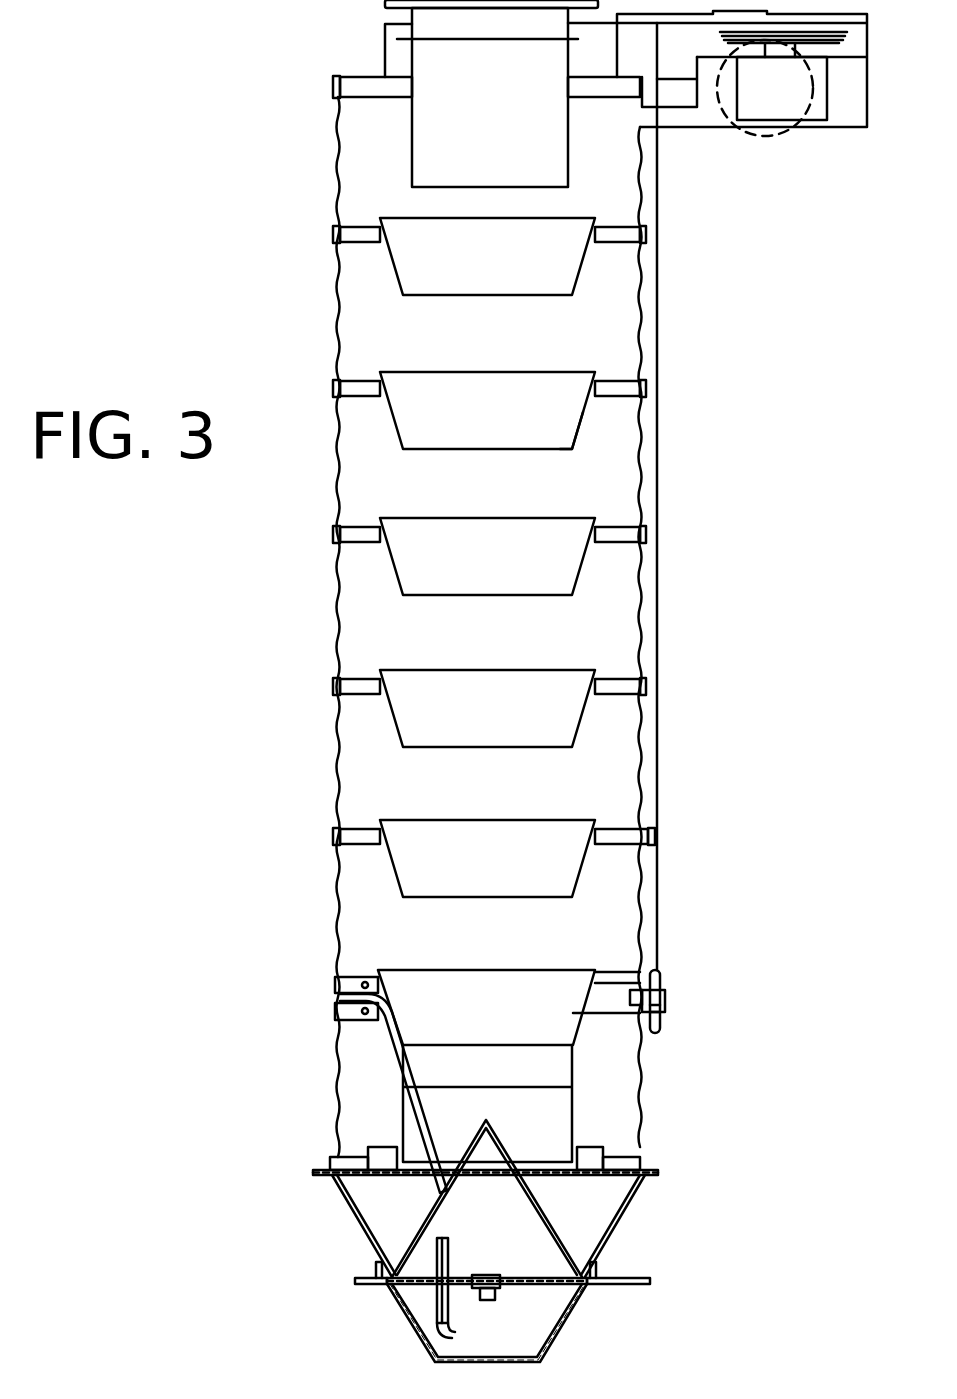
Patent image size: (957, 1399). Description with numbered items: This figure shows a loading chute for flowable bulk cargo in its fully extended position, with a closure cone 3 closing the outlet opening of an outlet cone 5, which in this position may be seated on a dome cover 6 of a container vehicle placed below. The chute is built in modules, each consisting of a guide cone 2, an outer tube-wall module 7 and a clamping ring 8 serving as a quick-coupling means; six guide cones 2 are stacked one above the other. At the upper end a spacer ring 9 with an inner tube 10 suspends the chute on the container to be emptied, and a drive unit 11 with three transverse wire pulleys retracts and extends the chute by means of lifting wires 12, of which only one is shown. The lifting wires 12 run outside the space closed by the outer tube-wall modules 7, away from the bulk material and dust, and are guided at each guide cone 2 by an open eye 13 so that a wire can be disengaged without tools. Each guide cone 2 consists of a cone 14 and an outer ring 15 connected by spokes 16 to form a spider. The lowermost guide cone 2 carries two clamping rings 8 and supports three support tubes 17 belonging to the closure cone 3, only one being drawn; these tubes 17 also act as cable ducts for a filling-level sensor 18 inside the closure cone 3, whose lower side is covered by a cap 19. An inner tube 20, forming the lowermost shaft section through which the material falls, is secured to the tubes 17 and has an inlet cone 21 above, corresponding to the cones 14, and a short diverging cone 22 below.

The guide cone 2 is at (402, 268).
The closure cone 3 is at (557, 1233).
The outlet cone 5 is at (347, 1197).
The dome cover 6 is at (605, 1288).
The outer tube-wall module 7 is at (337, 342).
The clamping ring 8 is at (333, 383).
The spacer ring 9 is at (497, 82).
The inner tube 10 is at (410, 155).
The drive unit 11 is at (793, 105).
The lifting wire 12 is at (658, 470).
The eye 13 is at (660, 833).
The cone 14 is at (585, 435).
The outer ring 15 is at (636, 388).
The spoke 16 is at (623, 342).
The support tube 17 is at (400, 1055).
The filling-level sensor 18 is at (355, 1283).
The cap 19 is at (418, 1340).
The inner tube 20 is at (578, 1122).
The inlet cone 21 is at (592, 1047).
The diverging cone 22 is at (590, 1160).